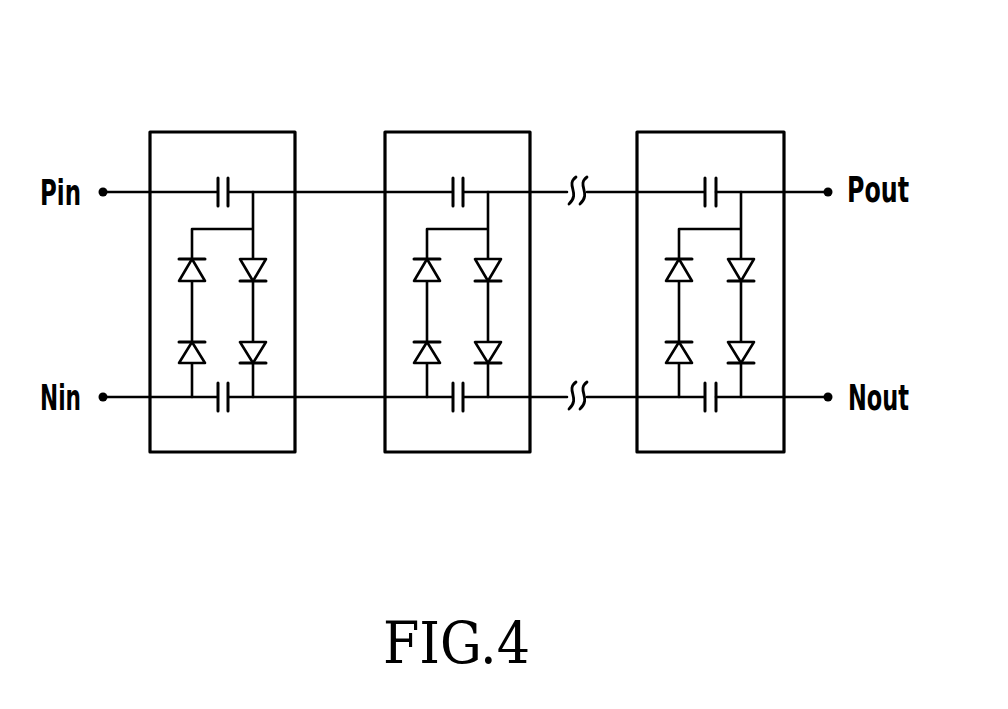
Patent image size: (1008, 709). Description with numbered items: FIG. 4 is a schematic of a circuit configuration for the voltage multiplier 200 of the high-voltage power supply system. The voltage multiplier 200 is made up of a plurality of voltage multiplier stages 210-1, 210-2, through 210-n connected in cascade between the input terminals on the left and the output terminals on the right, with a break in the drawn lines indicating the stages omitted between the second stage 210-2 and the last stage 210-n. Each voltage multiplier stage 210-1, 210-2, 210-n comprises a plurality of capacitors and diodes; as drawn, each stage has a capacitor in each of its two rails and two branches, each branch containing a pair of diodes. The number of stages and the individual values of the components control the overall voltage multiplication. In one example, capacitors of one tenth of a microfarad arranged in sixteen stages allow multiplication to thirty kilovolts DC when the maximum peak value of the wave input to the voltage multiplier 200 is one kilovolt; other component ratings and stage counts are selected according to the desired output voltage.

The voltage multiplier 200 is at (466, 294).
The voltage multiplier stage 210-1 is at (219, 132).
The voltage multiplier stage 210-2 is at (461, 132).
The voltage multiplier stage 210-n is at (713, 132).